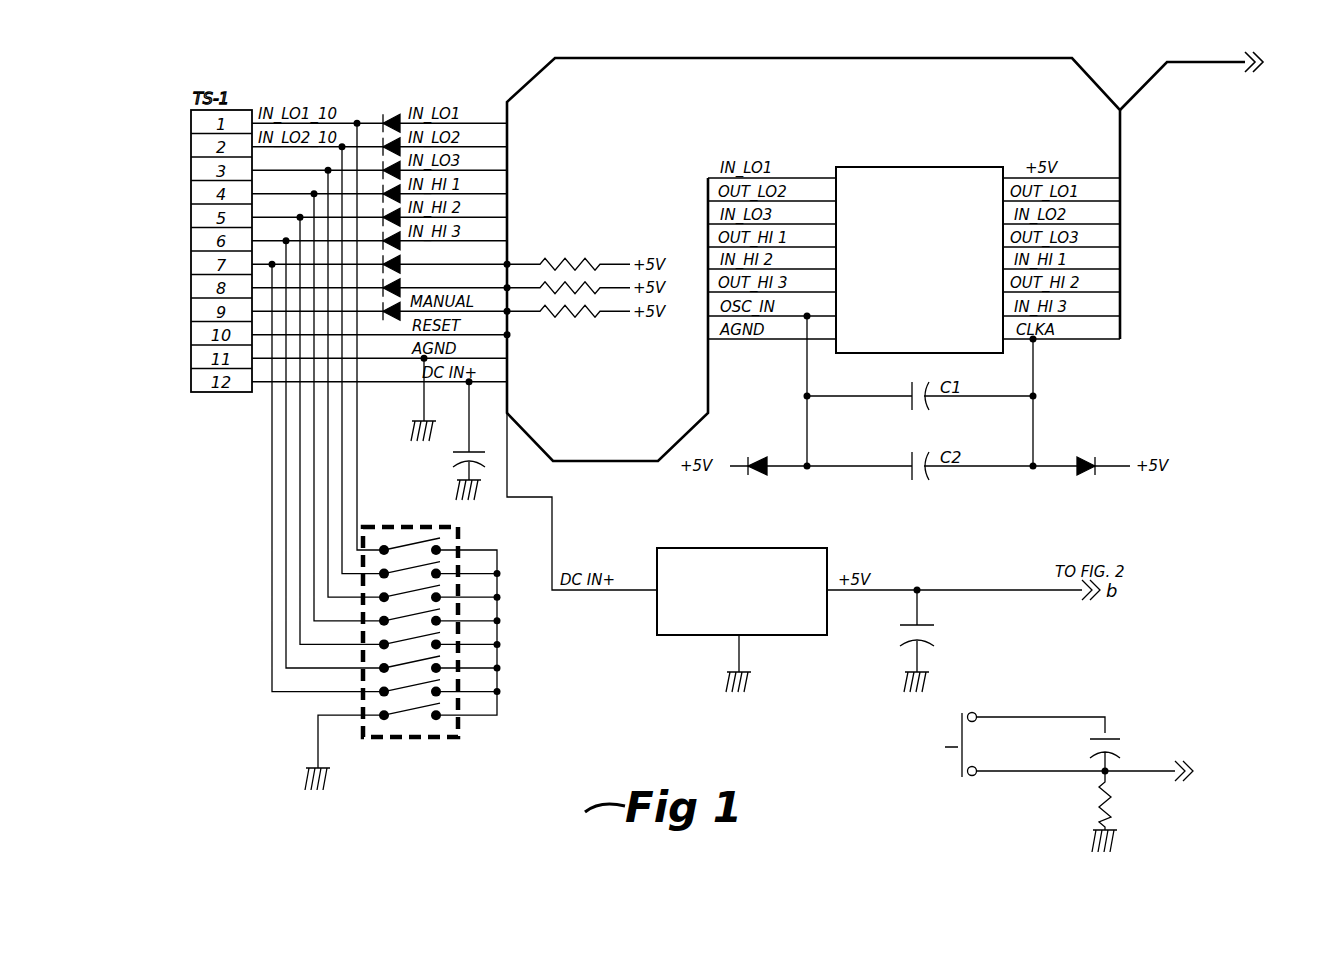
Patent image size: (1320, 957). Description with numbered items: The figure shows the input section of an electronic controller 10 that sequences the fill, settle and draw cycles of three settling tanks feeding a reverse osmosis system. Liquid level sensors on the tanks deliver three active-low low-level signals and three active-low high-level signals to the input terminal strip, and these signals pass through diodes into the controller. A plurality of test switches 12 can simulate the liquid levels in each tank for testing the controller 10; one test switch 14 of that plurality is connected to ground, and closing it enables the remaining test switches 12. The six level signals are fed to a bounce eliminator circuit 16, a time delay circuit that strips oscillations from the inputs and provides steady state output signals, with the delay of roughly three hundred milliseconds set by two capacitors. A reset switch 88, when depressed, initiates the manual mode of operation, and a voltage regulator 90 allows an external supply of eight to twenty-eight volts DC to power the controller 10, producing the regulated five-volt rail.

The electronic controller 10 is at (940, 55).
The test switches 12 is at (458, 737).
The test switch 14 is at (406, 712).
The bounce eliminator circuit 16 is at (921, 167).
The reset switch 88 is at (960, 768).
The voltage regulator 90 is at (751, 548).